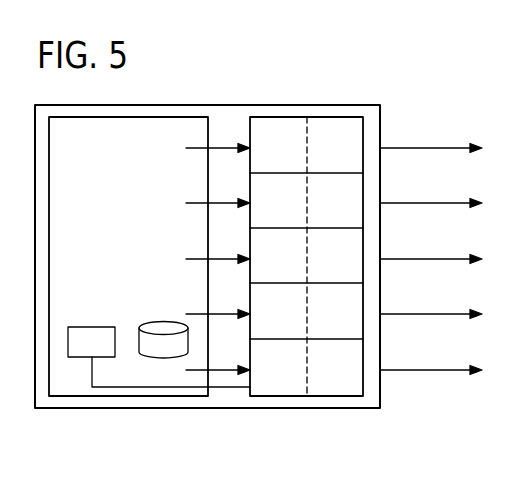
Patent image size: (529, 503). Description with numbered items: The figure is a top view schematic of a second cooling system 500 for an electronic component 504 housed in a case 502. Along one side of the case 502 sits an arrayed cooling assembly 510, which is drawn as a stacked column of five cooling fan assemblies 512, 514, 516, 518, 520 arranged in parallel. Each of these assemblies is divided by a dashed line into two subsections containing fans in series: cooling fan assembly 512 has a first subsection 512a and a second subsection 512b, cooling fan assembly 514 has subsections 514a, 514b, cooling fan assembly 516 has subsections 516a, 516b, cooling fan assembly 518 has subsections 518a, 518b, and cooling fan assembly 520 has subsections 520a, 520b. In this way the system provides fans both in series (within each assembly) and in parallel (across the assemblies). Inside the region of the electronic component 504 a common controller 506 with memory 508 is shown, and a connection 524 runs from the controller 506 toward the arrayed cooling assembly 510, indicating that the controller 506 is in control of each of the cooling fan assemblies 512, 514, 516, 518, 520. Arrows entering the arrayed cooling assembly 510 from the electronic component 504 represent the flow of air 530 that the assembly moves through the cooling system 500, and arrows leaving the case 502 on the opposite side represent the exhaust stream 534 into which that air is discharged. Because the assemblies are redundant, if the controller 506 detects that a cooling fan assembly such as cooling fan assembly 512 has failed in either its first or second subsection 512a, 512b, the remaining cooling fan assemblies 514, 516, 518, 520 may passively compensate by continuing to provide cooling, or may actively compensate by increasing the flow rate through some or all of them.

The second cooling system 500 is at (298, 76).
The case 502 is at (240, 409).
The electronic component 504 is at (109, 221).
The common controller 506 is at (107, 350).
The memory 508 is at (178, 350).
The arrayed cooling assembly 510 is at (353, 284).
The cooling fan assembly 512 is at (353, 358).
The first subsection 512a is at (295, 367).
The second subsection 512b is at (352, 367).
The cooling fan assembly 514 is at (353, 301).
The first subsection 514a is at (295, 311).
The second subsection 514b is at (352, 311).
The cooling fan assembly 516 is at (353, 247).
The first subsection 516a is at (295, 256).
The second subsection 516b is at (352, 256).
The cooling fan assembly 518 is at (353, 192).
The first subsection 518a is at (295, 201).
The second subsection 518b is at (352, 201).
The cooling fan assembly 520 is at (353, 137).
The first subsection 520a is at (295, 145).
The second subsection 520b is at (352, 145).
The connection line 524 is at (172, 387).
The flow of air 530 is at (200, 148).
The exhaust stream 534 is at (408, 371).